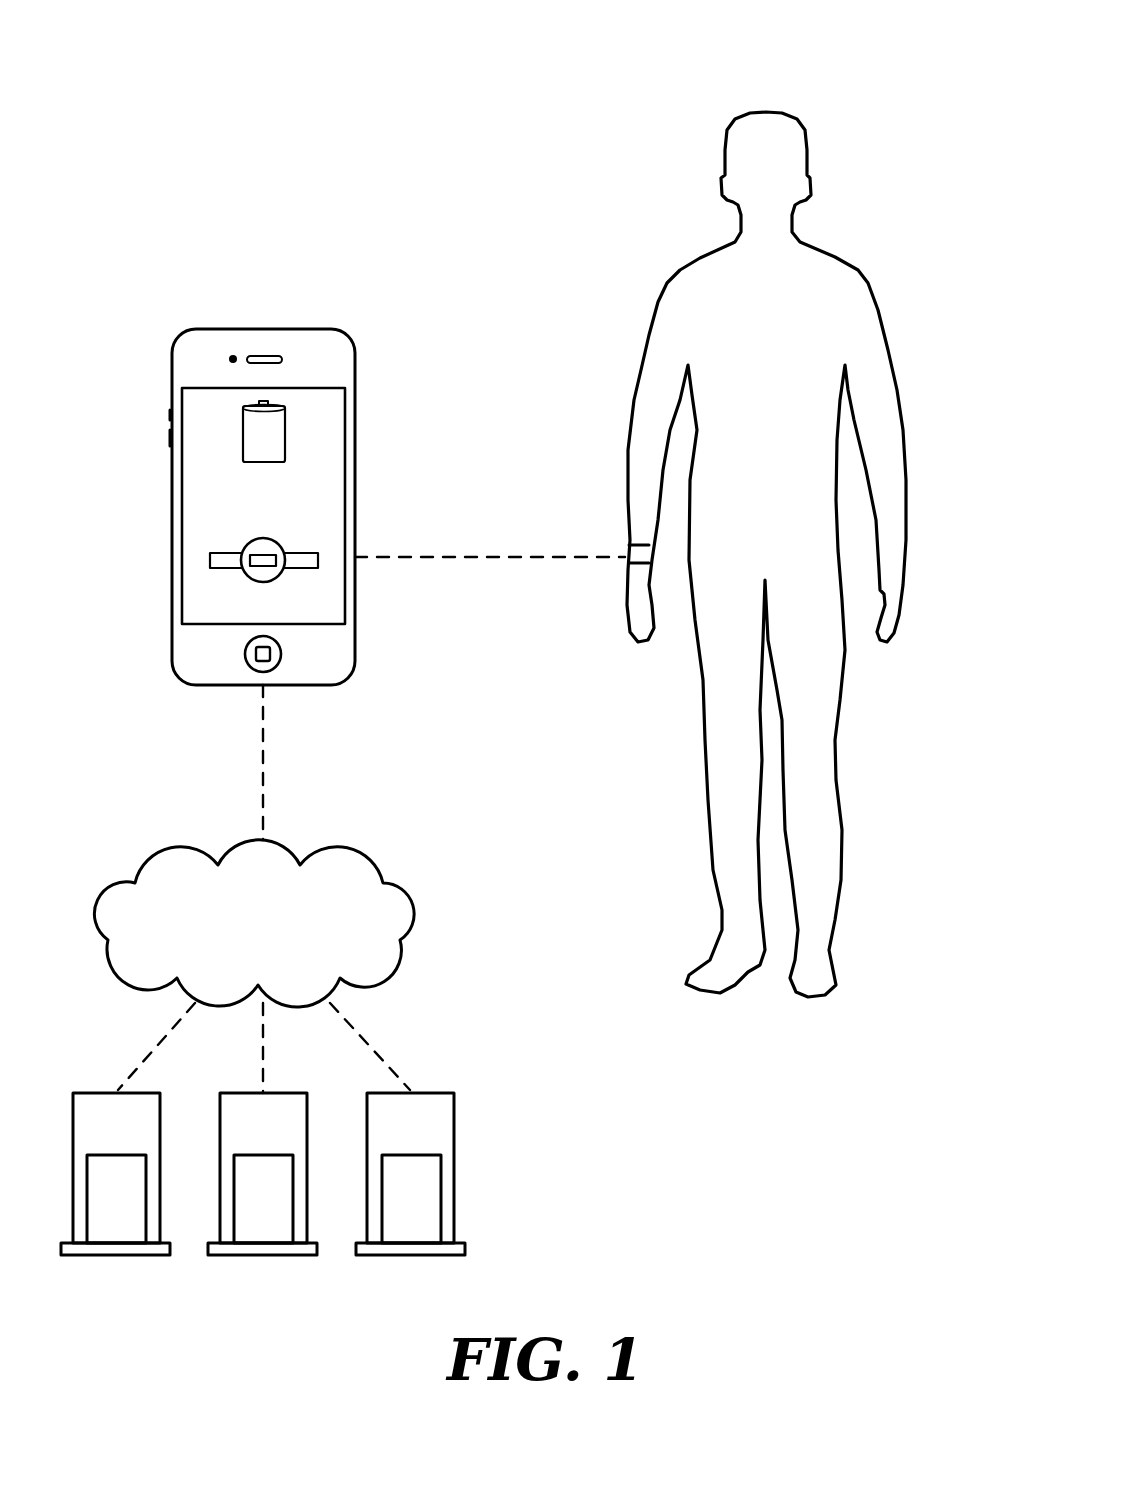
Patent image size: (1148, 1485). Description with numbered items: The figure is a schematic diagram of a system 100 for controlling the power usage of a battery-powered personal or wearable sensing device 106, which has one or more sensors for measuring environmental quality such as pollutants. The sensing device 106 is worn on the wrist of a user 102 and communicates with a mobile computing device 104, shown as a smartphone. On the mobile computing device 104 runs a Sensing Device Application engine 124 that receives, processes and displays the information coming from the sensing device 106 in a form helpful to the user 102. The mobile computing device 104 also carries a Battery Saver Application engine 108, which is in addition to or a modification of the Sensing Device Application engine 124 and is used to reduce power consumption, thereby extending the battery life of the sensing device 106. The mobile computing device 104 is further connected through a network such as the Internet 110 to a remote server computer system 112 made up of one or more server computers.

The system 100 is at (639, 85).
The user 102 is at (862, 297).
The mobile computing device 104 is at (212, 329).
The sensing device 106 is at (643, 545).
The Battery Saver Application engine 108 is at (322, 487).
The Internet 110 is at (168, 851).
The remote server computer system 112 is at (485, 1122).
The Sensing Device Application engine 124 is at (210, 578).